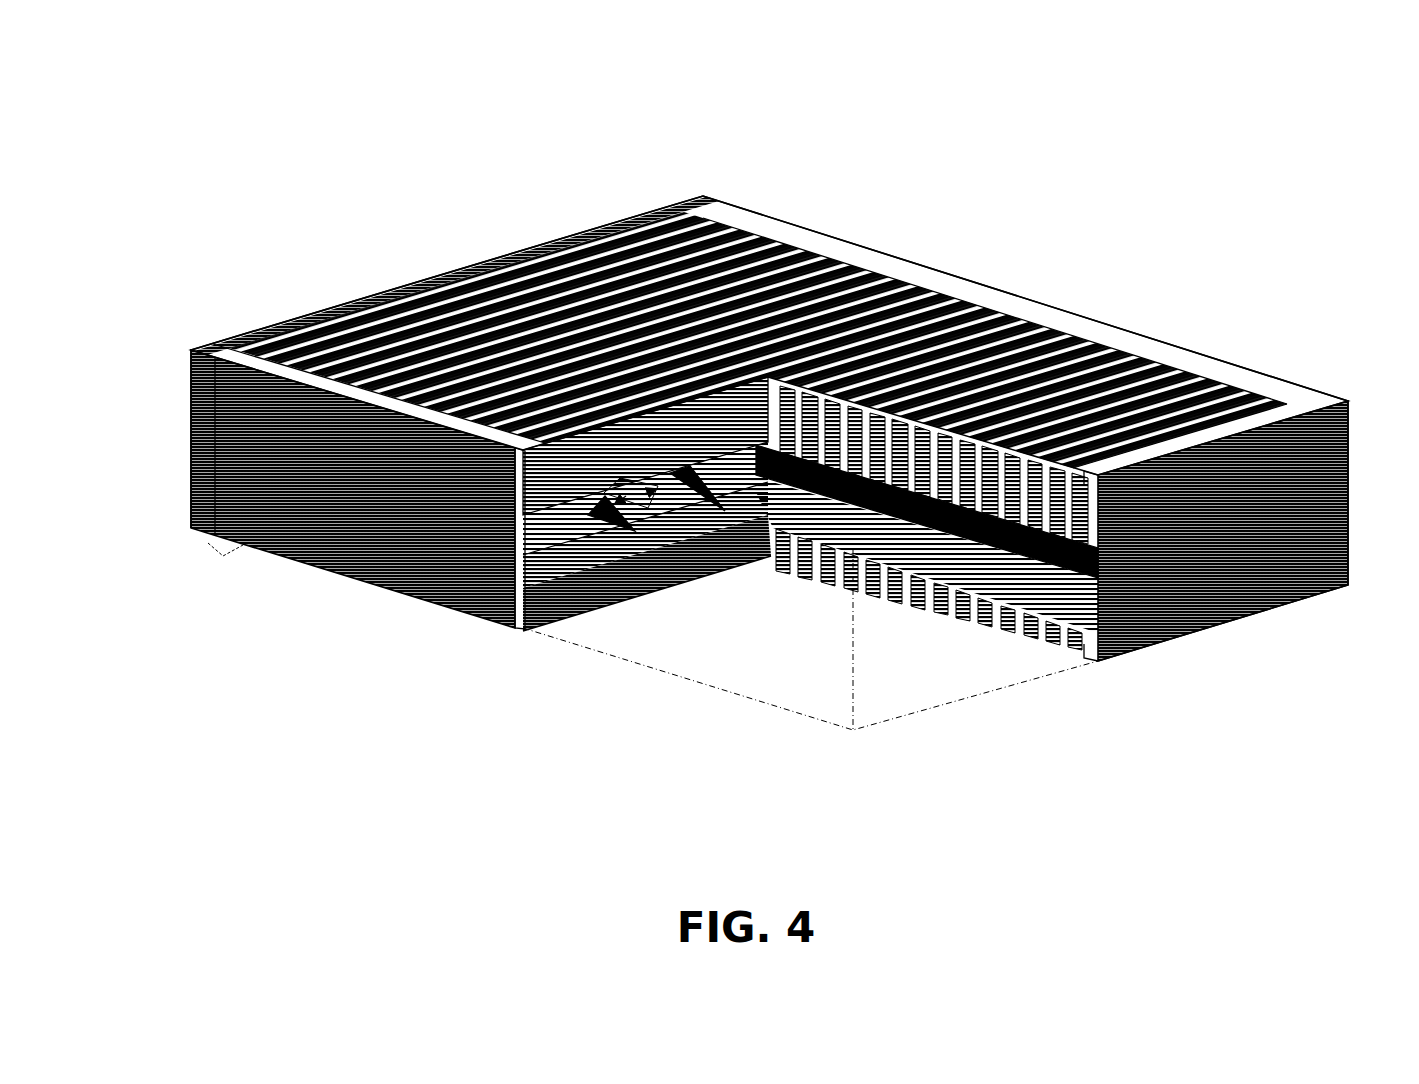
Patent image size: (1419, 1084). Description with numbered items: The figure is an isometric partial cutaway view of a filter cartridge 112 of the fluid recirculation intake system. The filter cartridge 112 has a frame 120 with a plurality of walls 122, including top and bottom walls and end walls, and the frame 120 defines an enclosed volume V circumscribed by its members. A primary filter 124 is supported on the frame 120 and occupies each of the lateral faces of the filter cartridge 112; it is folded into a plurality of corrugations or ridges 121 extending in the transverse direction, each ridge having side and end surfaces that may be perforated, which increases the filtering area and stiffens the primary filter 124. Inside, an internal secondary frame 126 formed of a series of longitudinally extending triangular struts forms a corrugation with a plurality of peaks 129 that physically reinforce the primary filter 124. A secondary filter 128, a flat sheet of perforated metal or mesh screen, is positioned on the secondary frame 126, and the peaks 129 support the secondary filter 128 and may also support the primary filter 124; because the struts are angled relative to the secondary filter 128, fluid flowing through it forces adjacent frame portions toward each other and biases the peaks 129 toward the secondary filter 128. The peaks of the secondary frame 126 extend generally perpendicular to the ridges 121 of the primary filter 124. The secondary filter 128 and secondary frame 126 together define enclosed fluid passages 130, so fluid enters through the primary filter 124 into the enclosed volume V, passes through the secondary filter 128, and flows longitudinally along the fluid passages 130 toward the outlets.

The filter cartridge 112 is at (288, 240).
The frame 120 is at (1255, 372).
The external fins 121 is at (918, 362).
The walls 122 is at (1182, 616).
The primary filter 124 is at (972, 594).
The internal secondary frame 126 is at (640, 512).
The secondary filter 128 is at (700, 452).
The peaks 129 is at (590, 490).
The enclosed fluid passages 130 is at (712, 505).
The enclosed volume V is at (355, 550).